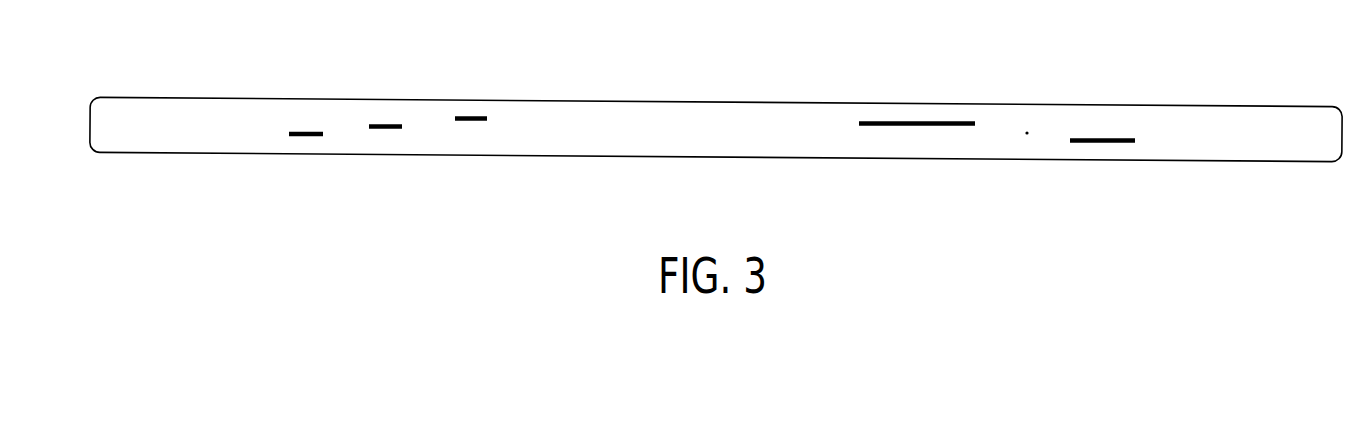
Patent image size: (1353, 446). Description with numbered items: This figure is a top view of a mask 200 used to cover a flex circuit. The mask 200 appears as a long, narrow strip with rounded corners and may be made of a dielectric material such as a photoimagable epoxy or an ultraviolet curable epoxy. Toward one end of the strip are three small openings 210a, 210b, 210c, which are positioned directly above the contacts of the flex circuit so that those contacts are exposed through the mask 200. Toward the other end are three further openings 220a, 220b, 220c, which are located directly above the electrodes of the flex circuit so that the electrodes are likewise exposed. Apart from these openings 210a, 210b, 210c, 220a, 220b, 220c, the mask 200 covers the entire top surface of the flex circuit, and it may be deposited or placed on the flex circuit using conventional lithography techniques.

The mask 200 is at (143, 108).
The opening 210a is at (307, 130).
The opening 210b is at (387, 125).
The opening 210c is at (470, 117).
The opening 220a is at (1105, 138).
The opening 220b is at (1027, 133).
The opening 220c is at (937, 122).